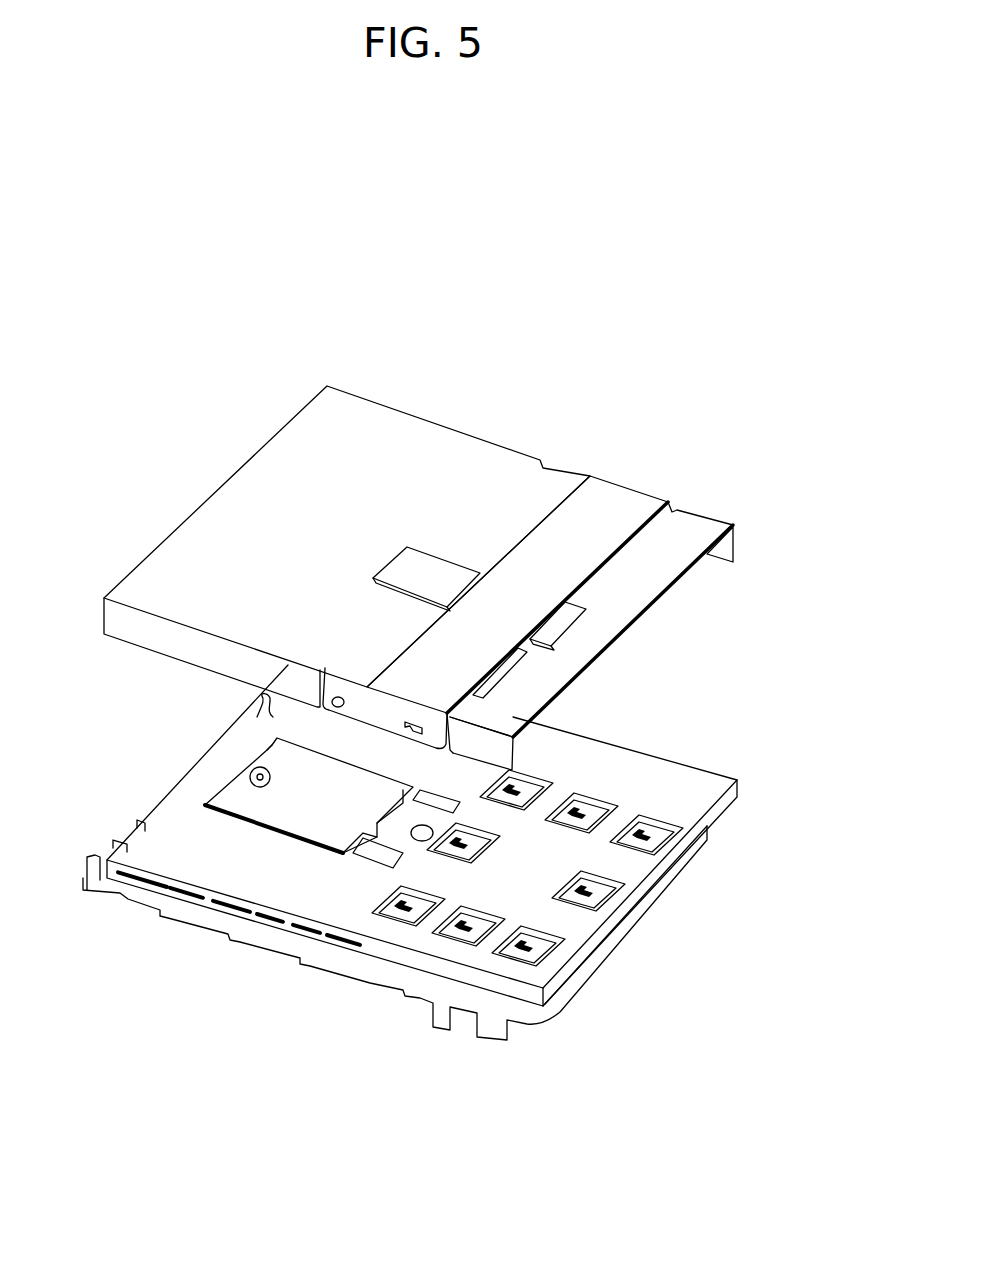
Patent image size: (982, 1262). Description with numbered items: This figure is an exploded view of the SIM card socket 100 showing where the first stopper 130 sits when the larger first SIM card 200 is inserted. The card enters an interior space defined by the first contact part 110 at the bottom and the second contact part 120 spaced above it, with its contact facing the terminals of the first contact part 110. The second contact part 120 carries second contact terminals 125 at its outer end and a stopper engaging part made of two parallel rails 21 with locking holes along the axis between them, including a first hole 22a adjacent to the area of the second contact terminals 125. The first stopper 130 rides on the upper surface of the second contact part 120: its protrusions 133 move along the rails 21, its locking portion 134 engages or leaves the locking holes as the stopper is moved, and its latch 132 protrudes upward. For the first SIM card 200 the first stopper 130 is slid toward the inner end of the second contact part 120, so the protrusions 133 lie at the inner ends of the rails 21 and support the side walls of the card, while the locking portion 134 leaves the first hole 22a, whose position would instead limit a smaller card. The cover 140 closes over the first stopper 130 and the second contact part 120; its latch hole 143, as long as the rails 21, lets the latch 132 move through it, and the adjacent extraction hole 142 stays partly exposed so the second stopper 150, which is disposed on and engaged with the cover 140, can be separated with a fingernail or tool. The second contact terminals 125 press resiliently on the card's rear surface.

The SIM card socket 100 is at (211, 336).
The first contact part 110 is at (135, 895).
The second contact part 120 is at (682, 787).
The second contact terminals 125 is at (533, 787).
The first stopper 130 is at (223, 802).
The latch 132 is at (447, 807).
The protrusions 133 is at (273, 738).
The locking portion 134 is at (252, 768).
The cover 140 is at (717, 512).
The extraction hole 142 is at (500, 668).
The latch hole 143 is at (383, 563).
The second stopper 150 is at (617, 502).
The first SIM card 200 is at (657, 882).
The rails 21 is at (362, 852).
The first hole 22a is at (417, 838).